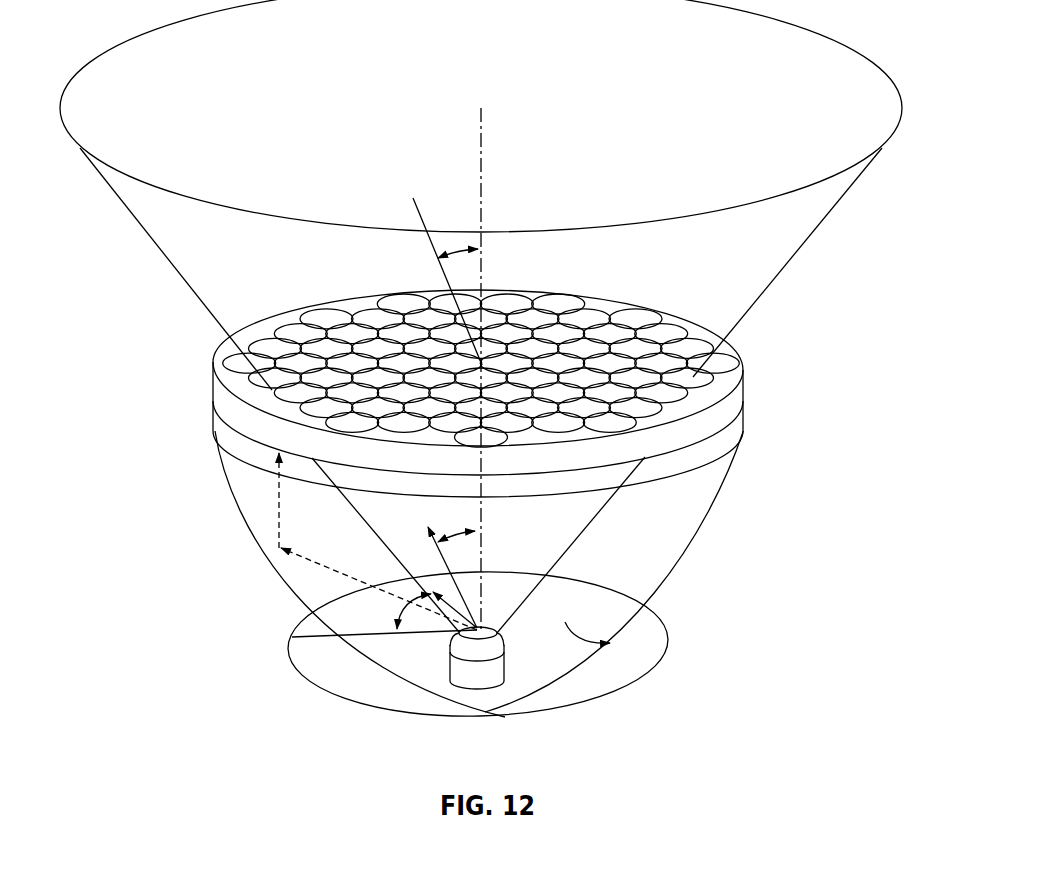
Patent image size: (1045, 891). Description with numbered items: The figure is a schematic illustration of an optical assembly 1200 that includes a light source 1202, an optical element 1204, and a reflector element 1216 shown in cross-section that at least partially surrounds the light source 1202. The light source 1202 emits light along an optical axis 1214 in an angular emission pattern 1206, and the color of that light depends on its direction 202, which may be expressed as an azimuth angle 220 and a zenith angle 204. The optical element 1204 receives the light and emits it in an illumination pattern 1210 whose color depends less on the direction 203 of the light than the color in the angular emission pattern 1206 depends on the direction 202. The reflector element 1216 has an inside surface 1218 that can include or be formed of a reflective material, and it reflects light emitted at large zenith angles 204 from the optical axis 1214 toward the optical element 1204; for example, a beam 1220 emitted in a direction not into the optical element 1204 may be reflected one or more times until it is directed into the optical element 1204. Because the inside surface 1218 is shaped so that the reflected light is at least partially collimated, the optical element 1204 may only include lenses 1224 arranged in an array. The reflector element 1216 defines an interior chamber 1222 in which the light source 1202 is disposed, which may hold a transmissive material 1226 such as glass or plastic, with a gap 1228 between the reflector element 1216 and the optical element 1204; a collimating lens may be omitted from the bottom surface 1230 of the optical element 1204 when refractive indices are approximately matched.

The optical assembly 1200 is at (554, 493).
The light source 1202 is at (495, 672).
The optical element 1204 is at (730, 406).
The angular emission pattern 1206 is at (587, 527).
The illumination pattern 1210 is at (812, 228).
The optical axis 1214 is at (483, 130).
The reflector element 1216 is at (650, 603).
The inside surface 1218 is at (574, 618).
The beam 1220 is at (318, 565).
The interior chamber 1222 is at (423, 660).
The lenses 1224 is at (669, 336).
The transmissive material 1226 is at (668, 552).
The gap 1228 is at (703, 447).
The bottom surface 1230 is at (687, 473).
The direction 202 is at (420, 537).
The direction 203 is at (430, 252).
The zenith angle 204 is at (462, 246).
The azimuth angle 220 is at (300, 593).